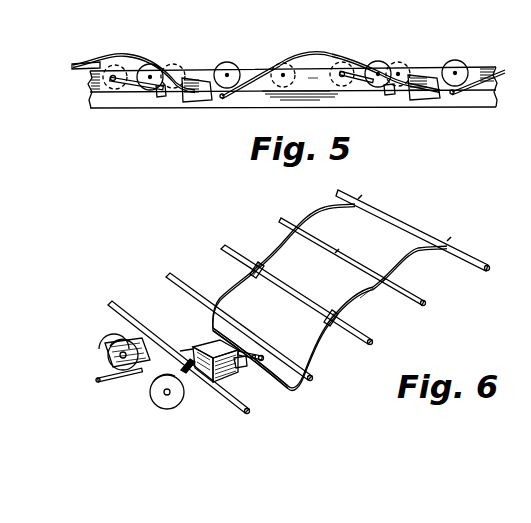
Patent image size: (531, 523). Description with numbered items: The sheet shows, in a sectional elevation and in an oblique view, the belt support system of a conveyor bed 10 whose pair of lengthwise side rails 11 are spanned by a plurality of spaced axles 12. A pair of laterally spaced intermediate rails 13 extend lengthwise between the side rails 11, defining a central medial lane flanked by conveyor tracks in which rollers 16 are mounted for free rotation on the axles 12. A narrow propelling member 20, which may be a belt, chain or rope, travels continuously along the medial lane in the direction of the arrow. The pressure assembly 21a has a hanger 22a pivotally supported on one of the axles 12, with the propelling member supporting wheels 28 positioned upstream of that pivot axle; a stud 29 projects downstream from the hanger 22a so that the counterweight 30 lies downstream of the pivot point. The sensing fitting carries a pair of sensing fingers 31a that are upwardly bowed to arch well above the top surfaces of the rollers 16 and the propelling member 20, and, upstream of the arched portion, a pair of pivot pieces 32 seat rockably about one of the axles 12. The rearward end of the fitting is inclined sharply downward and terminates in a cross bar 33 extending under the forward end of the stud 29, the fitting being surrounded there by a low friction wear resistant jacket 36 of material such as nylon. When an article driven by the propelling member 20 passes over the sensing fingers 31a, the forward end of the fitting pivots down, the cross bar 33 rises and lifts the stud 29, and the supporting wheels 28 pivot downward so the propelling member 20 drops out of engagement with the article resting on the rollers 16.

In FIG. 5, the conveyor bed 10 is at (66, 96).
In FIG. 5, the side rail 11 is at (470, 104).
In FIG. 5, the axle 12 is at (236, 63).
In FIG. 6, the axle 12 is at (0, 287).
In FIG. 5, the intermediate rail 13 is at (312, 77).
In FIG. 5, the roller 16 is at (176, 66).
In FIG. 5, the propelling member 20 is at (86, 61).
In FIG. 5, the pressure assembly 21a is at (247, 96).
In FIG. 6, the pressure assembly 21a is at (372, 308).
In FIG. 6, the hanger 22a is at (192, 375).
In FIG. 5, the propelling member supporting wheel 28 is at (145, 88).
In FIG. 6, the propelling member supporting wheel 28 is at (140, 397).
In FIG. 5, the stud 29 is at (172, 92).
In FIG. 6, the stud 29 is at (240, 370).
In FIG. 5, the counterweight 30 is at (192, 100).
In FIG. 6, the counterweight 30 is at (205, 343).
In FIG. 5, the sensing finger 31a is at (138, 53).
In FIG. 6, the sensing finger 31a is at (320, 212).
In FIG. 6, the pivot piece 32 is at (263, 265).
In FIG. 6, the cross bar 33 is at (282, 388).
In FIG. 6, the wear resistant jacket 36 is at (253, 354).